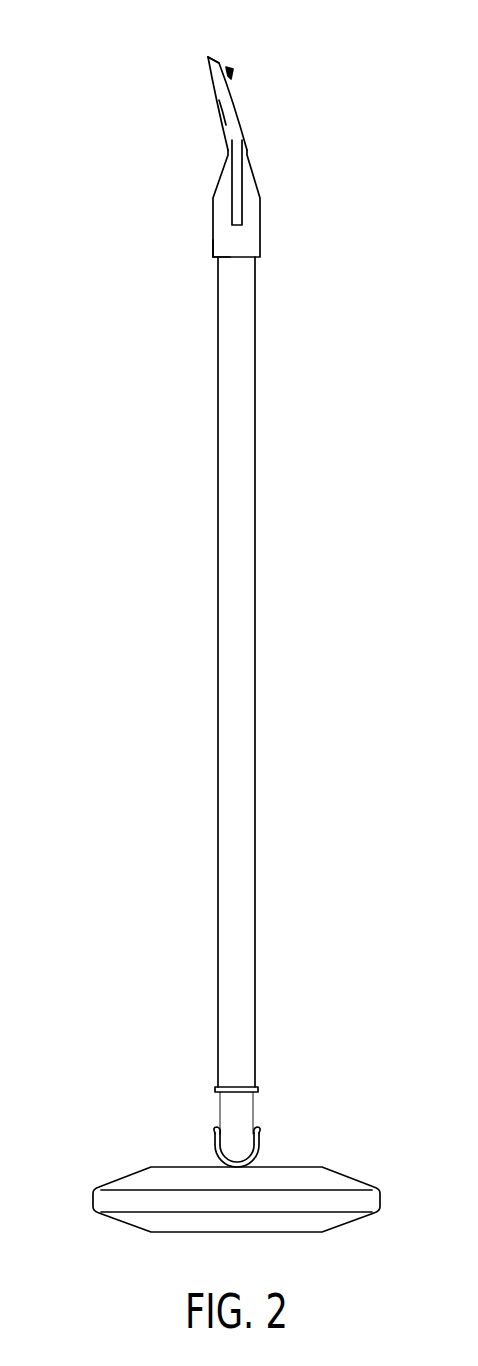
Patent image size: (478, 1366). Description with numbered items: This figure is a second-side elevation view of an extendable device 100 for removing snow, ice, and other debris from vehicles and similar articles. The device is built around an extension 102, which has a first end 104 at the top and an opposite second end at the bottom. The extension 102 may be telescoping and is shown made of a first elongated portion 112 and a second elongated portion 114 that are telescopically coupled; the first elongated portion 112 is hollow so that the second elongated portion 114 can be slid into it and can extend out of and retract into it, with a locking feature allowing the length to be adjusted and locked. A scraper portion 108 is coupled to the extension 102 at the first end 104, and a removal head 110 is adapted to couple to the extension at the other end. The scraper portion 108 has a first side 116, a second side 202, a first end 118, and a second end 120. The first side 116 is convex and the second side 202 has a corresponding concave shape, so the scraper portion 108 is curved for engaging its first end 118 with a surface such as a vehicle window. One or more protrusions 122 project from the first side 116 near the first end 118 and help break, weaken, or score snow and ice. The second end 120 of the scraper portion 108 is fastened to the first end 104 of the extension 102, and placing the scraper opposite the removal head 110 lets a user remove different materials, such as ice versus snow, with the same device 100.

The extendable device 100 is at (101, 606).
The extension 102 is at (198, 659).
The first end 104 is at (259, 257).
The scraper portion 108 is at (237, 162).
The removal head 110 is at (83, 1167).
The first elongated portion 112 is at (232, 742).
The second elongated portion 114 is at (233, 1107).
The first side 116 is at (240, 122).
The first end 118 is at (208, 58).
The second end 120 is at (212, 256).
The protrusions 122 is at (232, 70).
The second side 202 is at (227, 113).